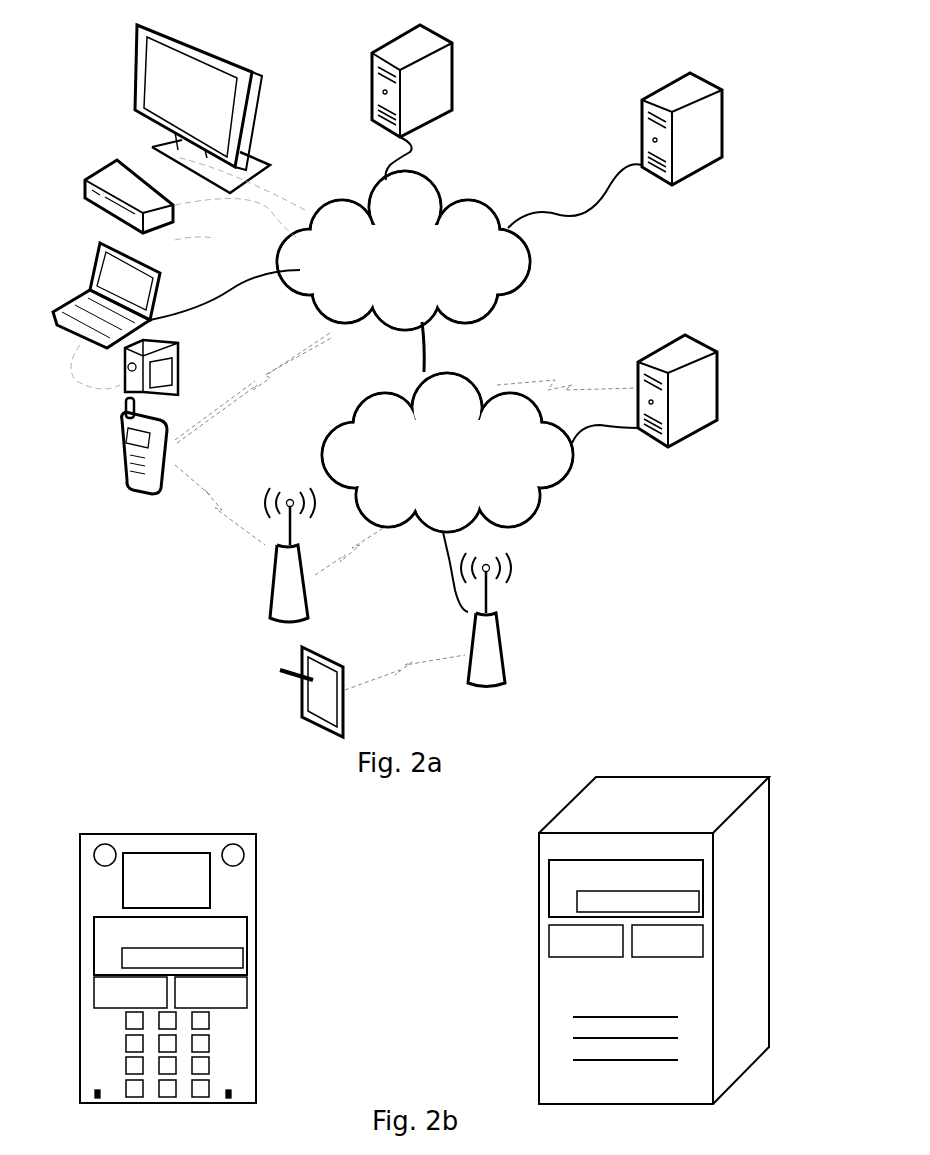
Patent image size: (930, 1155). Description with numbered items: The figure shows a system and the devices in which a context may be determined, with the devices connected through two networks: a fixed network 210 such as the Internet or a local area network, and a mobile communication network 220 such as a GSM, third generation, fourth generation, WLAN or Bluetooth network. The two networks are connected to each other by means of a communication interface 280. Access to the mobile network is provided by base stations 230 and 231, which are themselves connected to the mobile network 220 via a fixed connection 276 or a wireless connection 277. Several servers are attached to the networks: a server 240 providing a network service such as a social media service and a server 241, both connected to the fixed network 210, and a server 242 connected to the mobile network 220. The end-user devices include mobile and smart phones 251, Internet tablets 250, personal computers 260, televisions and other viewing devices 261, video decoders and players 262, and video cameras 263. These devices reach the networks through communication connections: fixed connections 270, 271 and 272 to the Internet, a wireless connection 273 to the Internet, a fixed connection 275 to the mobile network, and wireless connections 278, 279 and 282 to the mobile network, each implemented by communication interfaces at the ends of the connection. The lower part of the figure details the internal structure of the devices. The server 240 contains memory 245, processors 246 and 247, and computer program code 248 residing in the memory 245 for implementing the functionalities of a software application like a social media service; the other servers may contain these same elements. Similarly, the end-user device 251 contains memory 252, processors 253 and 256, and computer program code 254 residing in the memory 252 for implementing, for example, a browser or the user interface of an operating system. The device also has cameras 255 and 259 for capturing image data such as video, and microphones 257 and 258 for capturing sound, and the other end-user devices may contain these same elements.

In FIG. 2A, the fixed network 210 is at (512, 285).
In FIG. 2A, the mobile communication network 220 is at (525, 520).
In FIG. 2A, the base station 230 is at (264, 608).
In FIG. 2A, the base station 231 is at (503, 636).
In FIG. 2A, the server 240 is at (460, 58).
In FIG. 2B, the server 240 is at (668, 802).
In FIG. 2A, the server 241 is at (728, 108).
In FIG. 2A, the server 242 is at (727, 370).
In FIG. 2B, the memory 245 is at (547, 907).
In FIG. 2B, the processor 246 is at (547, 947).
In FIG. 2B, the processor 247 is at (705, 942).
In FIG. 2B, the computer program code 248 is at (700, 900).
In FIG. 2A, the Internet access device 250 is at (292, 712).
In FIG. 2A, the mobile phone 251 is at (113, 457).
In FIG. 2B, the mobile phone 251 is at (258, 866).
In FIG. 2B, the memory 252 is at (94, 917).
In FIG. 2B, the processor 253 is at (92, 993).
In FIG. 2B, the computer program code 254 is at (245, 960).
In FIG. 2B, the camera 255 is at (106, 842).
In FIG. 2B, the processor 256 is at (248, 1000).
In FIG. 2B, the microphone 257 is at (231, 1087).
In FIG. 2B, the microphone 258 is at (96, 1087).
In FIG. 2B, the camera 259 is at (234, 842).
In FIG. 2A, the personal computer 260 is at (85, 268).
In FIG. 2A, the viewing device 261 is at (122, 83).
In FIG. 2A, the video decoder and player 262 is at (95, 165).
In FIG. 2A, the video camera 263 is at (200, 340).
In FIG. 2A, the fixed connection 270 is at (237, 268).
In FIG. 2A, the fixed connection 271 is at (380, 160).
In FIG. 2A, the fixed connection 272 is at (577, 175).
In FIG. 2A, the wireless connection 273 is at (245, 385).
In FIG. 2A, the fixed connection 275 is at (592, 432).
In FIG. 2A, the fixed connection 276 is at (447, 598).
In FIG. 2A, the wireless connection 277 is at (345, 570).
In FIG. 2A, the wireless connection 278 is at (405, 688).
In FIG. 2A, the wireless connection 279 is at (219, 497).
In FIG. 2A, the communication interface 280 is at (426, 367).
In FIG. 2A, the wireless connection 282 is at (545, 382).